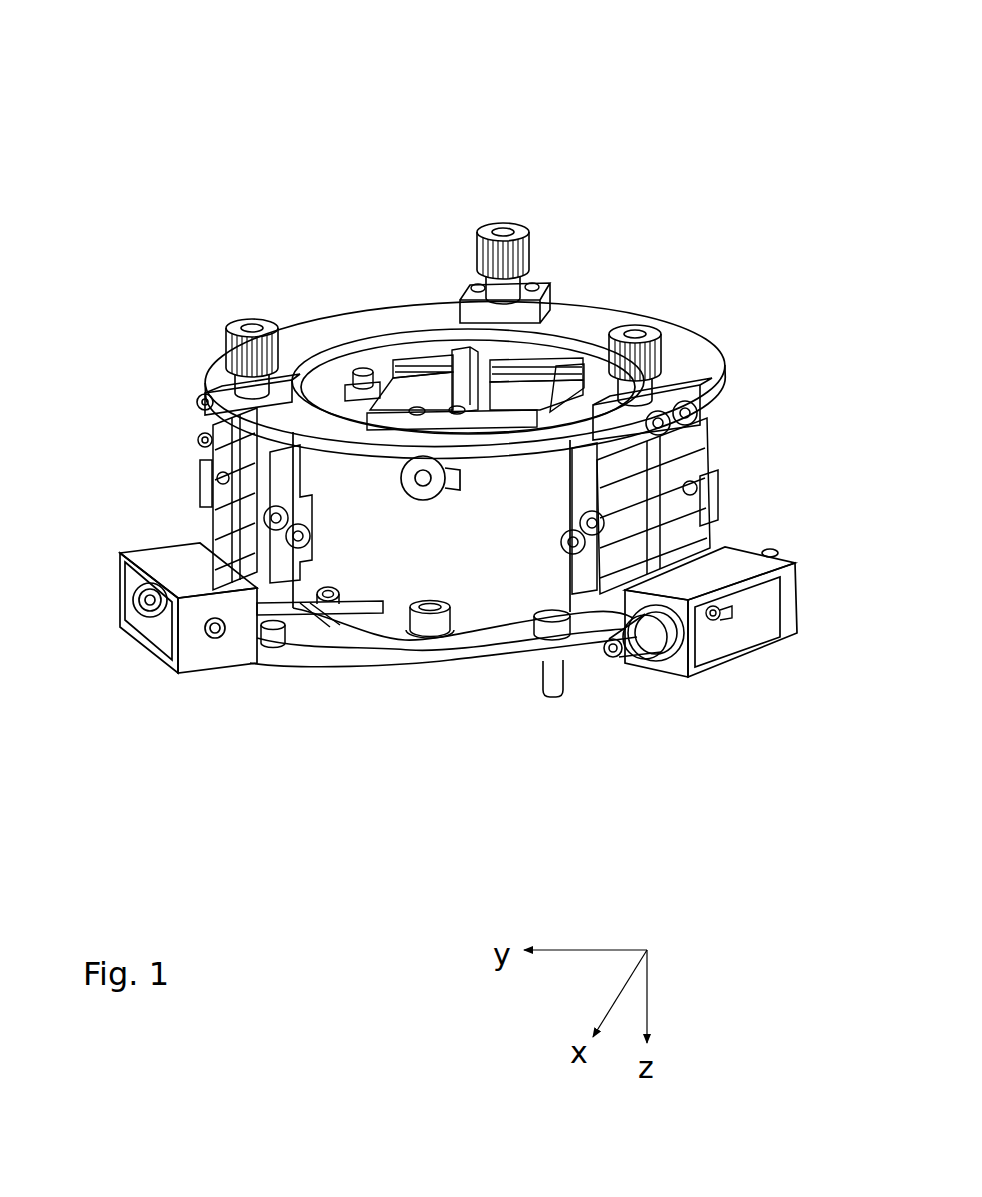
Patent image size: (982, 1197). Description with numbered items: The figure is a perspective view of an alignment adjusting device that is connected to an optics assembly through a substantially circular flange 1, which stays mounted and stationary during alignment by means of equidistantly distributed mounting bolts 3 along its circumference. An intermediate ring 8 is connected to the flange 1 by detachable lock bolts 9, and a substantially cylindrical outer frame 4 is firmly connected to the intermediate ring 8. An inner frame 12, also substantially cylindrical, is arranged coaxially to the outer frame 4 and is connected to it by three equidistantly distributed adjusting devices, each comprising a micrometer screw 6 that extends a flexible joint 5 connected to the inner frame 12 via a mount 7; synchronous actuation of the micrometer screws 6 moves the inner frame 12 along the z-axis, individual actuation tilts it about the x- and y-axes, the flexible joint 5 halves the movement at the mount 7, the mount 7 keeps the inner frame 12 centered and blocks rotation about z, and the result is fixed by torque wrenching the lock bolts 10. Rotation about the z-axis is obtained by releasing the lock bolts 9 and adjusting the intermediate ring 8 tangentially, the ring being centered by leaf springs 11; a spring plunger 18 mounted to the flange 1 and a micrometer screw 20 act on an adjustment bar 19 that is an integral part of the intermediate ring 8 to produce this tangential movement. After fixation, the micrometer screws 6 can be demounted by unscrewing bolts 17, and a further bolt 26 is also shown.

The flange 1 is at (355, 648).
The mounting bolt 3 is at (545, 688).
The outer frame 4 is at (393, 545).
The flexible joint 5 is at (202, 425).
The micrometer screw 6 is at (258, 318).
The mount 7 is at (719, 440).
The intermediate ring 8 is at (425, 637).
The lock bolt 9 is at (437, 617).
The lock bolt 10 is at (202, 382).
The leaf spring 11 is at (322, 602).
The inner frame 12 is at (340, 345).
The bolt 17 is at (477, 287).
The spring plunger 18 is at (167, 550).
The adjustment bar 19 is at (717, 623).
The micrometer screw 20 is at (668, 650).
The bolt 26 is at (318, 622).